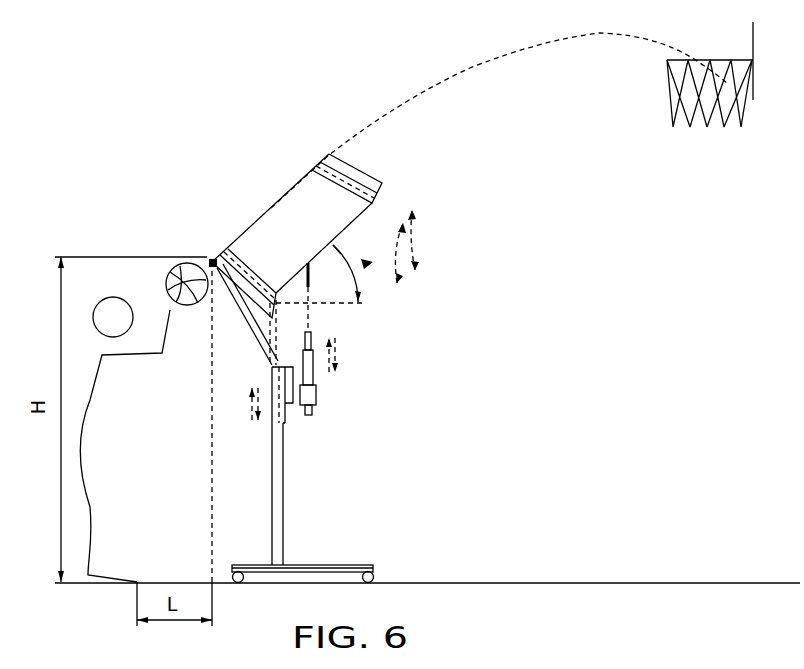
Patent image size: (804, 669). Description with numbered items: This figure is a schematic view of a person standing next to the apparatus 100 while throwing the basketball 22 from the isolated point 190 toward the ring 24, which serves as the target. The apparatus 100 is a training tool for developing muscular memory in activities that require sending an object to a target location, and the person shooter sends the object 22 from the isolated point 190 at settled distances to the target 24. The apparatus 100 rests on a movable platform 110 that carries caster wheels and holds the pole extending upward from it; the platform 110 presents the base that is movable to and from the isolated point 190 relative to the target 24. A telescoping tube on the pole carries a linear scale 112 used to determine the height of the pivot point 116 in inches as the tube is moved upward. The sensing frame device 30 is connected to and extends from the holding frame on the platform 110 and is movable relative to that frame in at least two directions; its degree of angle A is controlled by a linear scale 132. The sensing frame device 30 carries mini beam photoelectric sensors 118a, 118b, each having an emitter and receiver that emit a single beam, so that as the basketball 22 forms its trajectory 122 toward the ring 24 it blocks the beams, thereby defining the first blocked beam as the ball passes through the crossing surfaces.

The basketball 22 is at (165, 292).
The ring 24 is at (673, 86).
The sensing frame device 30 is at (304, 234).
The apparatus 100 is at (197, 383).
The platform 110 is at (360, 553).
The linear scale 112 is at (288, 410).
The pivot point 116 is at (205, 258).
The mini beam photoelectric sensor 118a is at (210, 258).
The mini beam photoelectric sensor 118b is at (328, 157).
The trajectory 122 is at (443, 82).
The linear scale 132 is at (315, 370).
The isolated point 190 is at (138, 582).